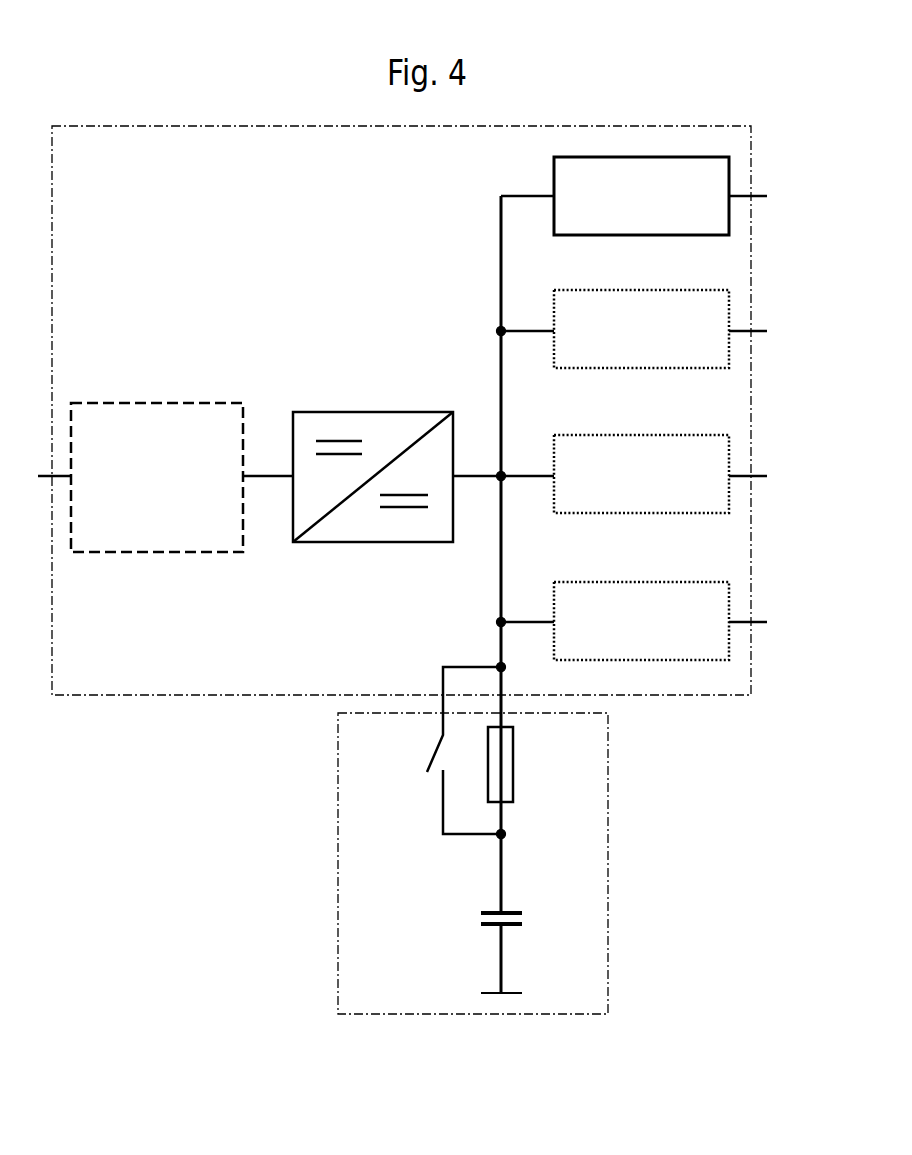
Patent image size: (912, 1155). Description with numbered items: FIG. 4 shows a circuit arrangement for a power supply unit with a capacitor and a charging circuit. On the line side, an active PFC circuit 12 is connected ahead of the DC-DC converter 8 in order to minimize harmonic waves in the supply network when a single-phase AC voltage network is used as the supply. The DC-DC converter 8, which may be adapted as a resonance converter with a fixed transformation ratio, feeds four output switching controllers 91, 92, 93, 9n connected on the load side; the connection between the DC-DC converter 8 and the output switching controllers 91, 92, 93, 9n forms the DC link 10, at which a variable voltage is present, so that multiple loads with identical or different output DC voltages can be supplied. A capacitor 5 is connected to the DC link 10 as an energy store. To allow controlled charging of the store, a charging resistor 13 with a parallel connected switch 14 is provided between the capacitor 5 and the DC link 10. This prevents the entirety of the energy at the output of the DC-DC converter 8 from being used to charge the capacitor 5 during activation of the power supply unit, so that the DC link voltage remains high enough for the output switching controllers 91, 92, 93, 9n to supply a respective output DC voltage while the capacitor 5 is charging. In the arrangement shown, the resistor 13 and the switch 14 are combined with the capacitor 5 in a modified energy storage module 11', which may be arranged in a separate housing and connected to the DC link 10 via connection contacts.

The active PFC circuit 12 is at (162, 403).
The DC-DC converter 8 is at (368, 412).
The DC link 10 is at (501, 577).
The output switching controller 91 is at (729, 181).
The output switching controller 92 is at (729, 311).
The output switching controller 93 is at (729, 454).
The output switching controller 9n is at (729, 601).
The modified energy storage module 11' is at (515, 863).
The switch 14 is at (431, 751).
The charging resistor 13 is at (514, 757).
The capacitor 5 is at (512, 926).